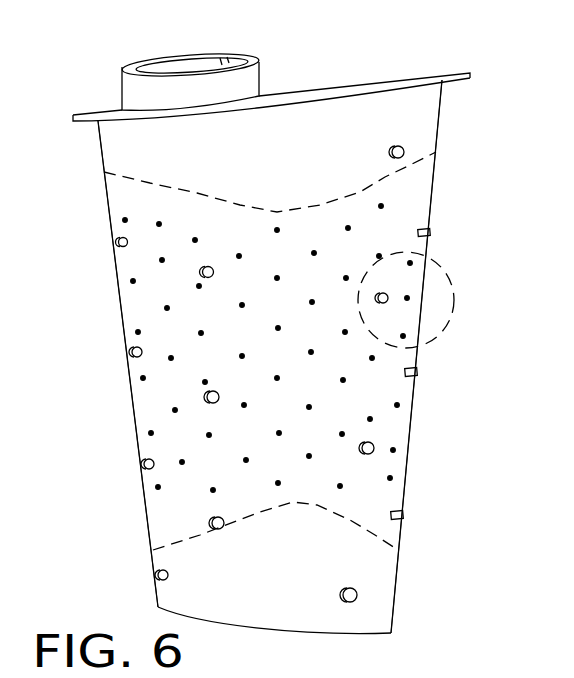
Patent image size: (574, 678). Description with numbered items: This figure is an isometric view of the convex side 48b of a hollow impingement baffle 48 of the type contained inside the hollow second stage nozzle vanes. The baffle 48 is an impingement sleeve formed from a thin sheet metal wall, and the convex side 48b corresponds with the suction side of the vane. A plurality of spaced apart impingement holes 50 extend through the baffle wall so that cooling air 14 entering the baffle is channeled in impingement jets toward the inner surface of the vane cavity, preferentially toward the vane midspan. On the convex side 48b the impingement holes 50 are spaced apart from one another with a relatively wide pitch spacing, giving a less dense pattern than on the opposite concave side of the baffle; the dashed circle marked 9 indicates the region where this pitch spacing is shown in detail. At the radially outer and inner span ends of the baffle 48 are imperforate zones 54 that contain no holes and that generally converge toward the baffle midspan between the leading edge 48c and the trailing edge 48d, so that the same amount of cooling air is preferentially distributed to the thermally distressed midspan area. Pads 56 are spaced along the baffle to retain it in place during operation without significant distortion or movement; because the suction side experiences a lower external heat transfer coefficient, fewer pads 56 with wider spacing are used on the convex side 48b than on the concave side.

The cooling air 14 is at (189, 0).
The impingement baffle 48 is at (135, 420).
The convex side of the baffle 48b is at (147, 165).
The leading edge of the baffle 48c is at (122, 307).
The trailing edge of the baffle 48d is at (408, 457).
The impingement holes 50 is at (370, 419).
The imperforate zones 54 is at (322, 180).
The pads 56 is at (417, 373).
The detail region of FIG. 9 is at (443, 268).